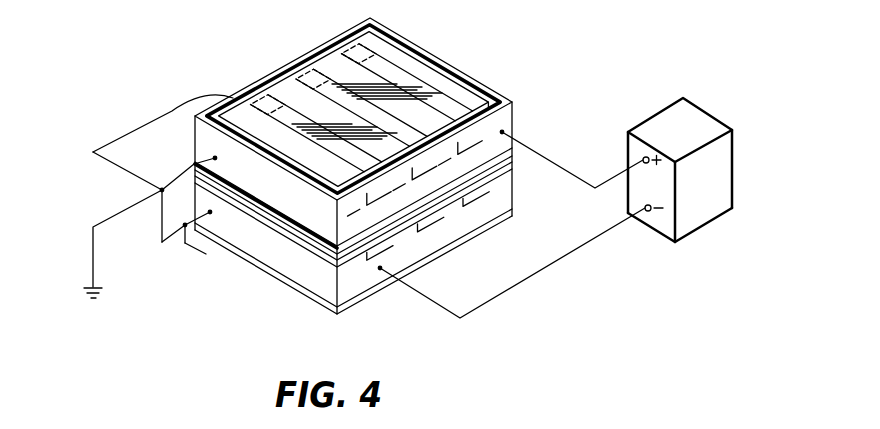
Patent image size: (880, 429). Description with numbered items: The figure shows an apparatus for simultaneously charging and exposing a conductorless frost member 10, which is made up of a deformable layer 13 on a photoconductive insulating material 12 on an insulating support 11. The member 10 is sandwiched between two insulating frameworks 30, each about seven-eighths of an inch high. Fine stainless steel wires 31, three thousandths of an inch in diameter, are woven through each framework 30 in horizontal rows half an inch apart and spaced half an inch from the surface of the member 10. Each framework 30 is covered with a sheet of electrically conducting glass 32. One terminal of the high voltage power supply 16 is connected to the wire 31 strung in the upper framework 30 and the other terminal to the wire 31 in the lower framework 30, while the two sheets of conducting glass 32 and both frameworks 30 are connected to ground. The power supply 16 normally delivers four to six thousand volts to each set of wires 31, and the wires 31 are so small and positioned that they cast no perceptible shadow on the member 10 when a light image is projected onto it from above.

The conductorless frost member 10 is at (514, 170).
The insulating support 11 is at (318, 256).
The photoconductive insulating material 12 is at (354, 258).
The deformable layer 13 is at (308, 211).
The high voltage power supply 16 is at (718, 122).
The insulating framework 30 is at (513, 127).
The stainless steel wire 31 is at (283, 99).
The electrically conducting glass 32 is at (421, 49).